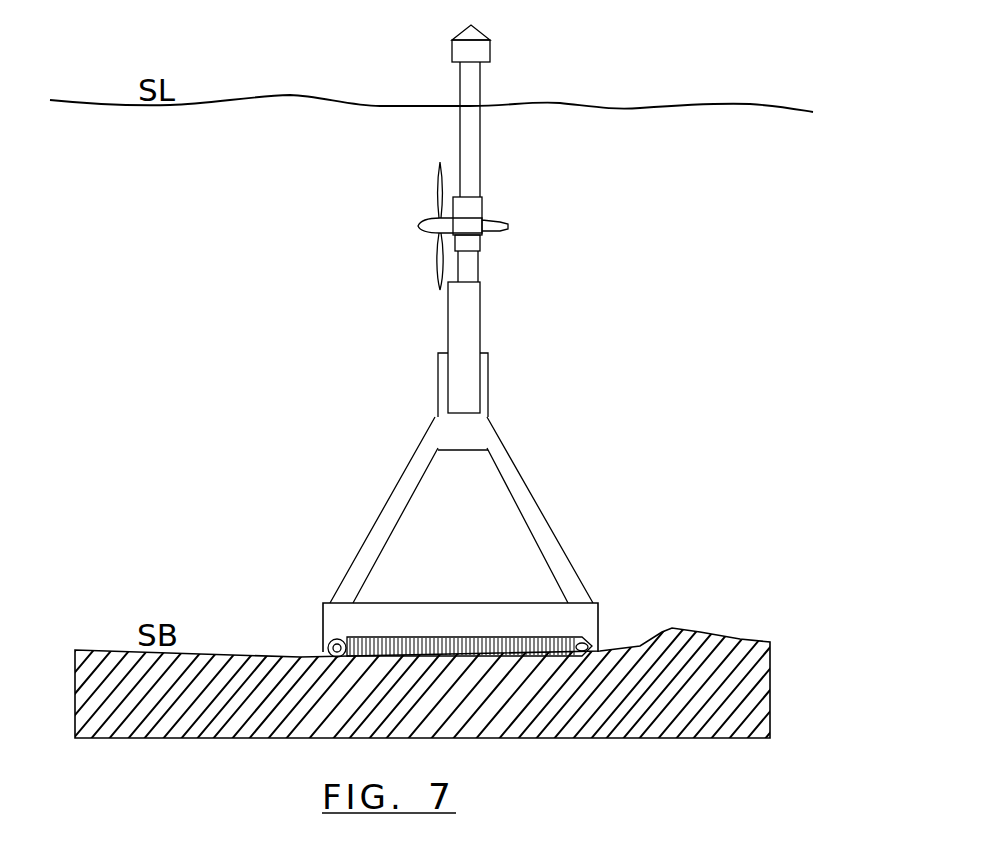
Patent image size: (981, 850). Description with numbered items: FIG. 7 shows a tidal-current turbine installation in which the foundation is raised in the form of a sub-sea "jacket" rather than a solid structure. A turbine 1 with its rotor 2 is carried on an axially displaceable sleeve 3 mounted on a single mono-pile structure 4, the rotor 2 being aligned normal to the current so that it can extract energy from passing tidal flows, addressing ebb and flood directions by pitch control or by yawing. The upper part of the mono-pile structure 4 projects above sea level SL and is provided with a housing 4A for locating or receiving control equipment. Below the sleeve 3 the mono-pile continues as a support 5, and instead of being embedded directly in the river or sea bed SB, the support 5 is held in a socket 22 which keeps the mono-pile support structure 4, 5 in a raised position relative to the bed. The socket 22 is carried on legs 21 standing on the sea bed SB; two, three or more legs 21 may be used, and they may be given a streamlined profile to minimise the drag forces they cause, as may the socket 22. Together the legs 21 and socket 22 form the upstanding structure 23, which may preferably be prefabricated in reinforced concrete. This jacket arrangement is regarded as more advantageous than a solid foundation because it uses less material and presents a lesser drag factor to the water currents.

The turbine 1 is at (425, 234).
The rotor 2 is at (437, 190).
The axially displaceable sleeve 3 is at (467, 207).
The mono-pile structure 4 is at (468, 137).
The housing 4A is at (472, 52).
The support 5 is at (466, 308).
The legs 21 is at (380, 510).
The socket 22 is at (488, 384).
The upstanding structure 23 is at (341, 386).